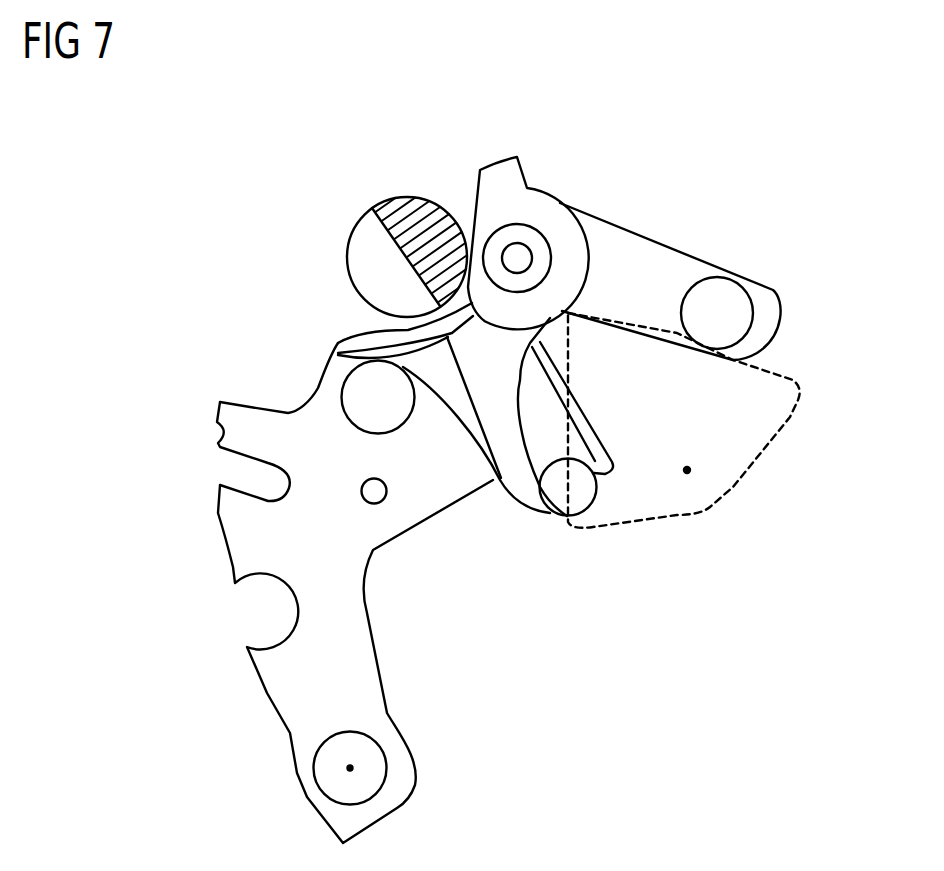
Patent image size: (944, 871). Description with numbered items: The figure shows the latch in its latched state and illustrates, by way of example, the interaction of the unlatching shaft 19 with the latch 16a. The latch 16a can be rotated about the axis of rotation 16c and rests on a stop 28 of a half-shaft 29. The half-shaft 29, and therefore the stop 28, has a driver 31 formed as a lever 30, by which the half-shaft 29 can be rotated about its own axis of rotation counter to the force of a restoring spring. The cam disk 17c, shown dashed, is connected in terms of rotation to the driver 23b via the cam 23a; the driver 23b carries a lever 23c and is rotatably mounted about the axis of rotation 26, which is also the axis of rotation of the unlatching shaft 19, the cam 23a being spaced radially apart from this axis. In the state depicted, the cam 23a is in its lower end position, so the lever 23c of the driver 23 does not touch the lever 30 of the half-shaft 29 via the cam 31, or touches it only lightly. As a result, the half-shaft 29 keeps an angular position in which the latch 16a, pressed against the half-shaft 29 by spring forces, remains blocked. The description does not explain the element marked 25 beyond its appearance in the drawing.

The latch 16a is at (367, 343).
The axis of rotation 16c is at (352, 770).
The cam disk 17c is at (770, 427).
The unlatching shaft 19 is at (536, 357).
The drive element 23 is at (602, 307).
The cam 23a is at (723, 297).
The driver 23b is at (627, 220).
The lever 23c is at (477, 397).
The pivot point 25 is at (687, 470).
The axis of rotation 26 is at (520, 252).
The stop 28 is at (385, 225).
The half-shaft 29 is at (427, 213).
The lever 30 is at (542, 452).
The driver 31 is at (558, 500).